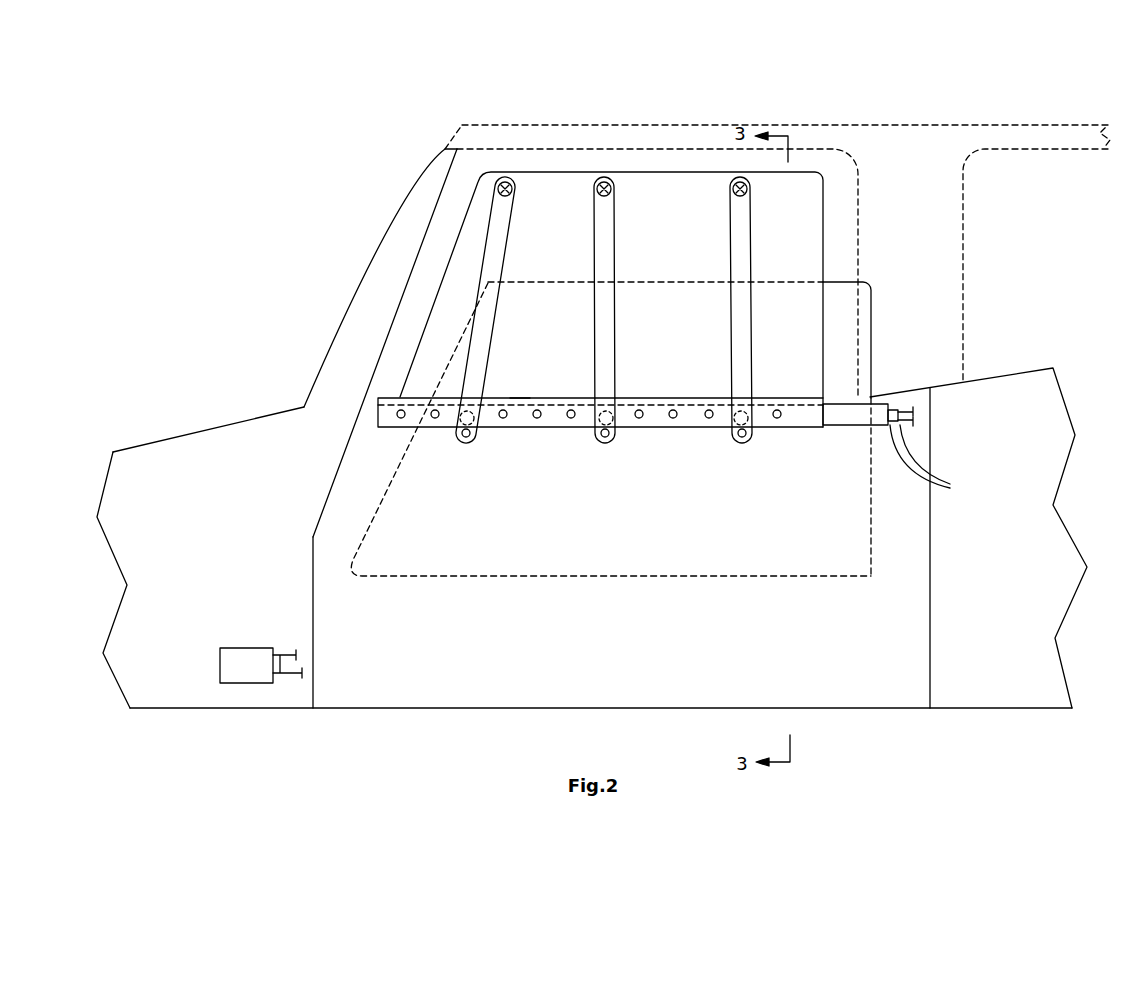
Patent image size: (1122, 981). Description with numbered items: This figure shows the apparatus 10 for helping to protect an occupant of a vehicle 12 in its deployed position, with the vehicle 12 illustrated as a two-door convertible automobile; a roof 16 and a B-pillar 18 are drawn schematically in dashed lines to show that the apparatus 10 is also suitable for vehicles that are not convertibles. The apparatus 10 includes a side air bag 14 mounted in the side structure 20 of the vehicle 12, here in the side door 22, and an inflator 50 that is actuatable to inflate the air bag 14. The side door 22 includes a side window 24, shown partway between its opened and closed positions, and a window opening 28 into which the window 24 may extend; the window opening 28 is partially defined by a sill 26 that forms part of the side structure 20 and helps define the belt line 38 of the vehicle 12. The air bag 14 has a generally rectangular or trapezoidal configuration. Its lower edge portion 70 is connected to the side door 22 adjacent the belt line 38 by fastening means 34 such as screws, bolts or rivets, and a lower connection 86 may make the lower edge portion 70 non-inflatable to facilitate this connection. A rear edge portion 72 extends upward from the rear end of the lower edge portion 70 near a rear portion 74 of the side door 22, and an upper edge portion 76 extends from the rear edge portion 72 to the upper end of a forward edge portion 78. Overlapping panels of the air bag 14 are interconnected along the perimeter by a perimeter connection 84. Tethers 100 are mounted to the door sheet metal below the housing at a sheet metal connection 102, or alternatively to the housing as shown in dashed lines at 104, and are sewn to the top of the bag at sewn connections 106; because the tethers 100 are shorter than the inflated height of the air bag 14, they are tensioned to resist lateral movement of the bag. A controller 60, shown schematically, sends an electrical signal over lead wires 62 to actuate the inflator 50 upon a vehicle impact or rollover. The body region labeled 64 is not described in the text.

The apparatus 10 is at (996, 238).
The vehicle 12 is at (312, 238).
The side air bag 14 is at (545, 192).
The roof 16 is at (823, 140).
The B-pillar 18 is at (940, 297).
The side structure 20 is at (497, 633).
The side door 22 is at (418, 672).
The side window 24 is at (651, 300).
The sill 26 is at (597, 395).
The window opening 28 is at (447, 223).
The fastening means 34 is at (675, 418).
The belt line 38 is at (520, 400).
The inflator 50 is at (850, 415).
The controller 60 is at (248, 668).
The lead wires 62 is at (293, 737).
The truck body 64 is at (916, 385).
The lower edge portion 70 is at (517, 420).
The rear edge portion 72 is at (800, 250).
The rear portion of the side door 74 is at (845, 532).
The upper edge portion 76 is at (651, 190).
The forward edge portion 78 is at (448, 295).
The perimeter connection 84 is at (402, 352).
The lower connection 86 is at (553, 412).
The tethers 100 is at (738, 227).
The sheet metal connection 102 is at (467, 437).
The housing connection 104 is at (462, 420).
The sewn connections 106 is at (493, 187).